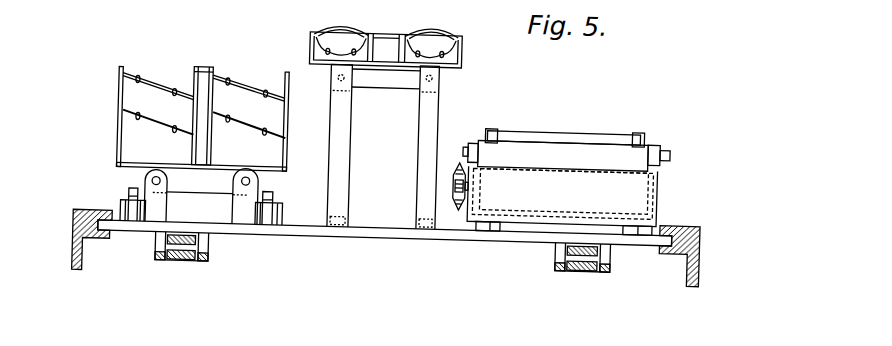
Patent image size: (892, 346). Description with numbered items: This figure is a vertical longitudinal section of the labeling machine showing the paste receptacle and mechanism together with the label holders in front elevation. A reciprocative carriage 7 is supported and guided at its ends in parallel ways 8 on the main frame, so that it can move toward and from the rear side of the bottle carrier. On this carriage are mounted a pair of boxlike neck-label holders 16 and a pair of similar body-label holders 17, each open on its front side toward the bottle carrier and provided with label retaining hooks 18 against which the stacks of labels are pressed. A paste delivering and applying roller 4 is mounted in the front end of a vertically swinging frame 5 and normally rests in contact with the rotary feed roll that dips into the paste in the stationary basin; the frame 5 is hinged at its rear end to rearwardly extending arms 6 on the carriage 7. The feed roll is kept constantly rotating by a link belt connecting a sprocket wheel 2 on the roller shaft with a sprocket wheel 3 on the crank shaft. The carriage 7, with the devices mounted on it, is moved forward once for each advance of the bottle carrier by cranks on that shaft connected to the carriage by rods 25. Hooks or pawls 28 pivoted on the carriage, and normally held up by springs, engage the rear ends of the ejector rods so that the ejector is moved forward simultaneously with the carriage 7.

The sprocket wheel 2 is at (457, 190).
The sprocket wheel 3 is at (562, 196).
The paste delivering and applying roller 4 is at (567, 156).
The vertically swinging frame 5 is at (484, 121).
The rearwardly extending arms 6 is at (490, 220).
The reciprocative carriage 7 is at (384, 216).
The parallel ways 8 is at (85, 209).
The neck-label holders 16 is at (306, 41).
The body-label holders 17 is at (115, 130).
The label retaining hooks 18 is at (147, 95).
The rods 25 is at (186, 258).
The hooks or pawls 28 is at (131, 187).